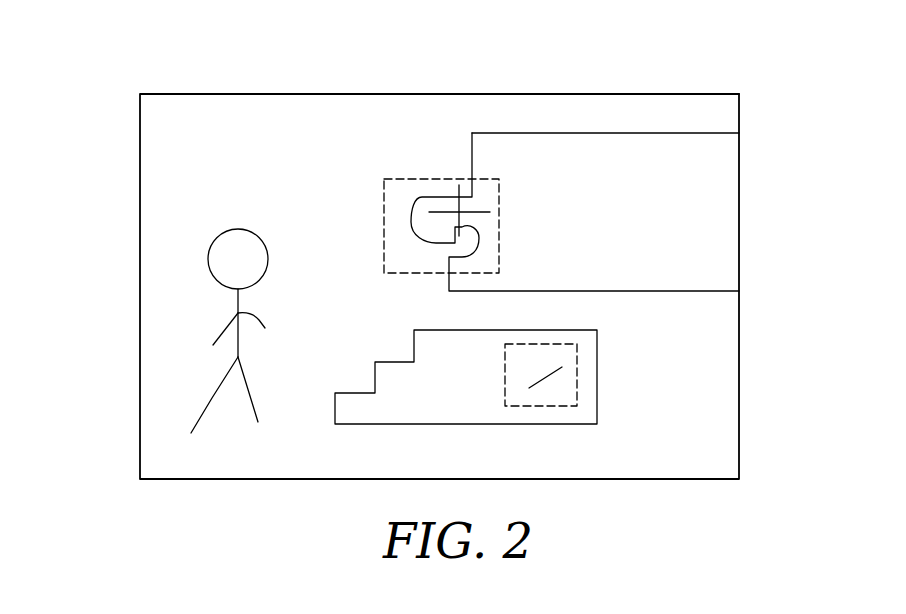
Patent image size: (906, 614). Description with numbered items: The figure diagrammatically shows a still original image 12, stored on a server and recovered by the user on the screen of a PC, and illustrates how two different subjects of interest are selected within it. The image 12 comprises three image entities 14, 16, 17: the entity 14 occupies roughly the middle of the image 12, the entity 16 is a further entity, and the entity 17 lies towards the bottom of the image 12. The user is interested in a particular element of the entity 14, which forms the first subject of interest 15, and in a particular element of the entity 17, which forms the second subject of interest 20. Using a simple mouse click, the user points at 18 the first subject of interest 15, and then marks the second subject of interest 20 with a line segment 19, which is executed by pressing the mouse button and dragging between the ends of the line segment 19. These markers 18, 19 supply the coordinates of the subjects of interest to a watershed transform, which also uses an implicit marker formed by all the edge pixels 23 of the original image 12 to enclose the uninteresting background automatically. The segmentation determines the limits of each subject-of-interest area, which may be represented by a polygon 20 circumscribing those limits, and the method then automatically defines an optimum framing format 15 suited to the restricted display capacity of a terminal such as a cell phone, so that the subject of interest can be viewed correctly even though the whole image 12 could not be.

The original image 12 is at (208, 110).
The image entity 14 is at (697, 183).
The first subject of interest 15 is at (400, 178).
The image entity 16 is at (213, 398).
The image entity 17 is at (588, 402).
The pointing marker 18 is at (459, 212).
The line segment marker 19 is at (538, 383).
The second subject of interest 20 is at (543, 342).
The edge pixels 23 is at (139, 480).